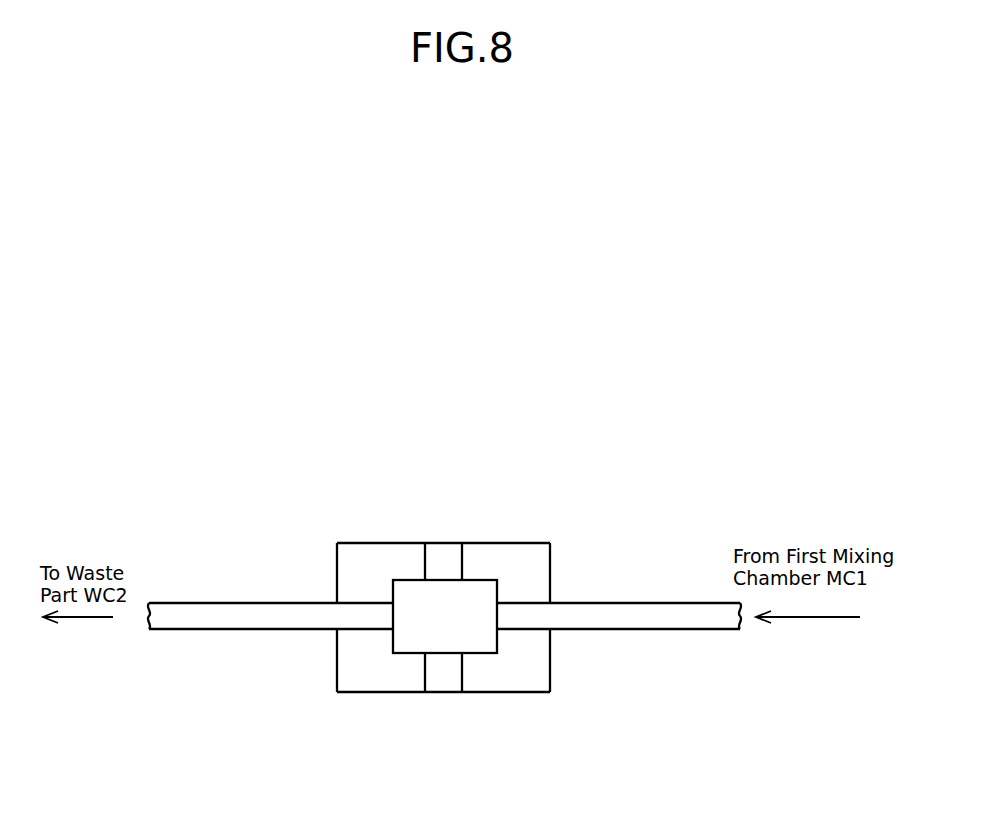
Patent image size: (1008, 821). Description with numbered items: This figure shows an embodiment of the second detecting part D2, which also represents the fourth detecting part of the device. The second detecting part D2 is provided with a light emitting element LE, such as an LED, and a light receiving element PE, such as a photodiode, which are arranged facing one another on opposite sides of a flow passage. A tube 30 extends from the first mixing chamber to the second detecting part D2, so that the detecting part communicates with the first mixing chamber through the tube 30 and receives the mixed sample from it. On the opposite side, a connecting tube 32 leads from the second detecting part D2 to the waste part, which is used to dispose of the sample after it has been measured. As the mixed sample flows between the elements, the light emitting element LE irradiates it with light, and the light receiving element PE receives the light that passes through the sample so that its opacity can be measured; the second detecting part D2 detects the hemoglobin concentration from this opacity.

The second detecting part D2 is at (378, 542).
The light emitting element LE is at (445, 553).
The light receiving element PE is at (448, 685).
The connecting tube 32 is at (269, 608).
The tube 30 is at (623, 613).